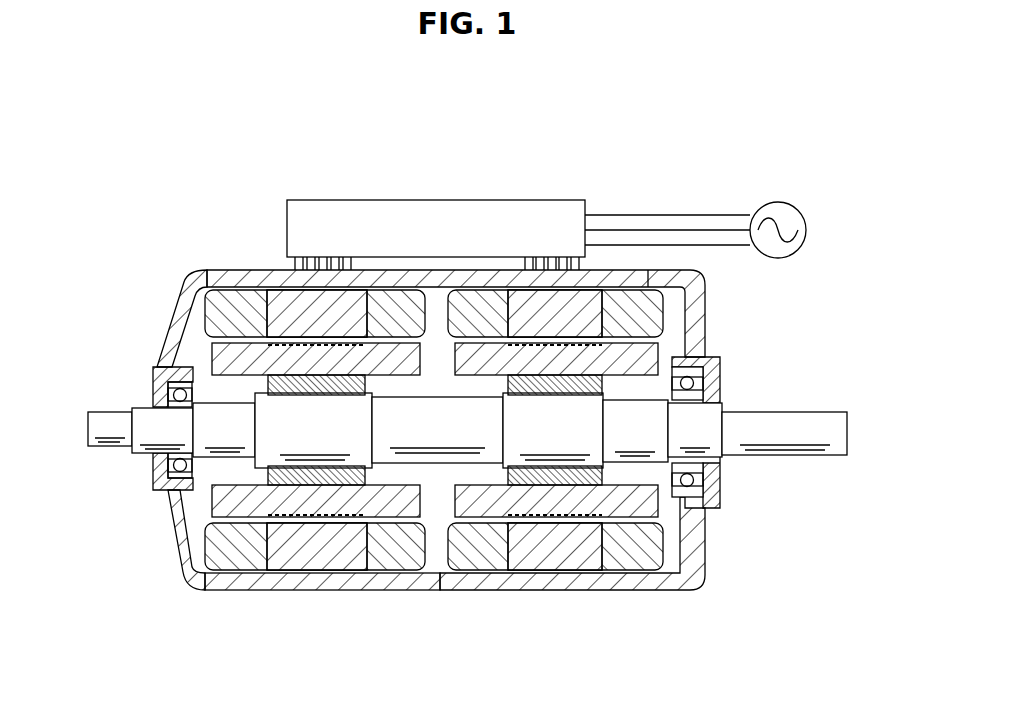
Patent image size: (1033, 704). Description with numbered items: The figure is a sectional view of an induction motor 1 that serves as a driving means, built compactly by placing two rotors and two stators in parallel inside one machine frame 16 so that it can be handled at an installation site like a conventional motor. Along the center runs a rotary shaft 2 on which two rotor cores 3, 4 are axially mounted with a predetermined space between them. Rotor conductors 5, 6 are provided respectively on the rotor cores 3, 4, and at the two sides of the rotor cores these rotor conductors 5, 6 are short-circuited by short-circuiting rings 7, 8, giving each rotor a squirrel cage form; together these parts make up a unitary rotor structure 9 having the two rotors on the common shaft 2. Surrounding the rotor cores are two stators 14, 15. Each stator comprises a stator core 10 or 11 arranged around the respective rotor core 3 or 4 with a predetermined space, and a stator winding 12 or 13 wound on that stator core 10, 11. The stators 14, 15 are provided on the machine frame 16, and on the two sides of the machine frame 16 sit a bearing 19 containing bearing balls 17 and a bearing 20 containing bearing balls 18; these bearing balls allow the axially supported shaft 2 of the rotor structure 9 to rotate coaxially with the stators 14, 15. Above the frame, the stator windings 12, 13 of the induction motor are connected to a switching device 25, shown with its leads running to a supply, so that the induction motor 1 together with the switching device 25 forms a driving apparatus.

The induction motor 1 is at (158, 122).
The rotary shaft 2 is at (112, 412).
The rotor core 3 is at (265, 480).
The rotor core 4 is at (508, 480).
The rotor conductor 5 is at (330, 487).
The rotor conductor 6 is at (575, 487).
The short-circuiting ring 7 is at (204, 590).
The short-circuiting ring 8 is at (366, 540).
The rotor structure 9 is at (672, 344).
The stator core 10 is at (265, 305).
The stator core 11 is at (550, 590).
The stator winding 12 is at (205, 288).
The stator winding 13 is at (653, 593).
The stator 14 is at (215, 222).
The stator 15 is at (723, 594).
The machine frame 16 is at (412, 590).
The bearing balls 17 is at (153, 484).
The bearing balls 18 is at (722, 366).
The bearing 19 is at (165, 494).
The bearing 20 is at (708, 512).
The switching device 25 is at (446, 200).